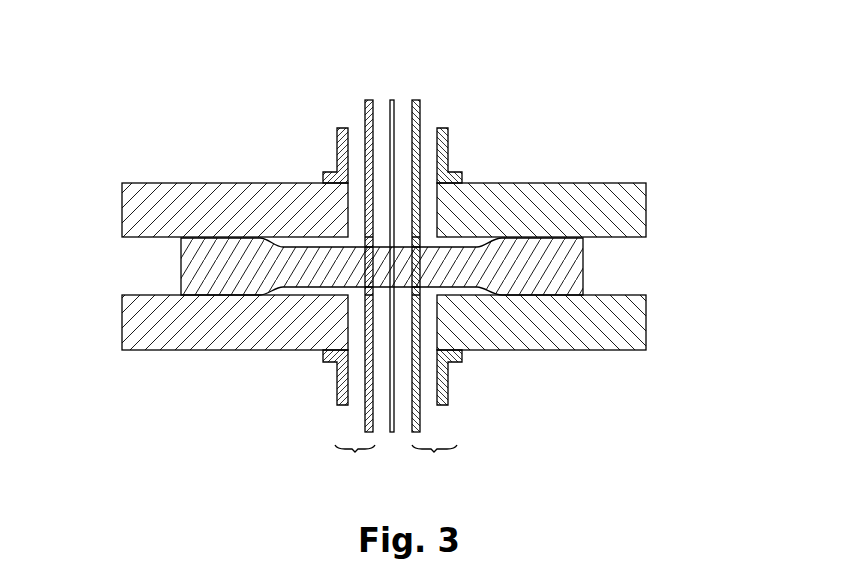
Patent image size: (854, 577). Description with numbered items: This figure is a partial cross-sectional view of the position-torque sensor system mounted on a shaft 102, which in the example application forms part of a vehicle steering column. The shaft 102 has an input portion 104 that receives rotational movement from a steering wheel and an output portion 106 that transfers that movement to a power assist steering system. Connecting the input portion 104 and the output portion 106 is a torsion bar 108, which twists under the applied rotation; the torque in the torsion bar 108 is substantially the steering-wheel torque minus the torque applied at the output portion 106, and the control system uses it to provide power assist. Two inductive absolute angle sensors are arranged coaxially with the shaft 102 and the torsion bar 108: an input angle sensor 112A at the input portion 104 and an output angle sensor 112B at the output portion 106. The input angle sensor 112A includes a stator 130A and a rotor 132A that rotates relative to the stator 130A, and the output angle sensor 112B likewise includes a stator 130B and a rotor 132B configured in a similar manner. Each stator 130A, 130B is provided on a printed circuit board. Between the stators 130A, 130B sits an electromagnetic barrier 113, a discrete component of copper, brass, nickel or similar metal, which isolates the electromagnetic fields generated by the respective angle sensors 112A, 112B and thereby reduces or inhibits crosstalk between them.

The shaft 102 is at (200, 181).
The input portion 104 is at (496, 182).
The output portion 106 is at (233, 352).
The torsion bar 108 is at (181, 270).
The electromagnetic barrier 113 is at (392, 110).
The stator 130A is at (421, 218).
The stator 130B is at (365, 220).
The rotor 132A is at (449, 146).
The rotor 132B is at (337, 136).
The input angle sensor 112A is at (446, 471).
The output angle sensor 112B is at (354, 471).